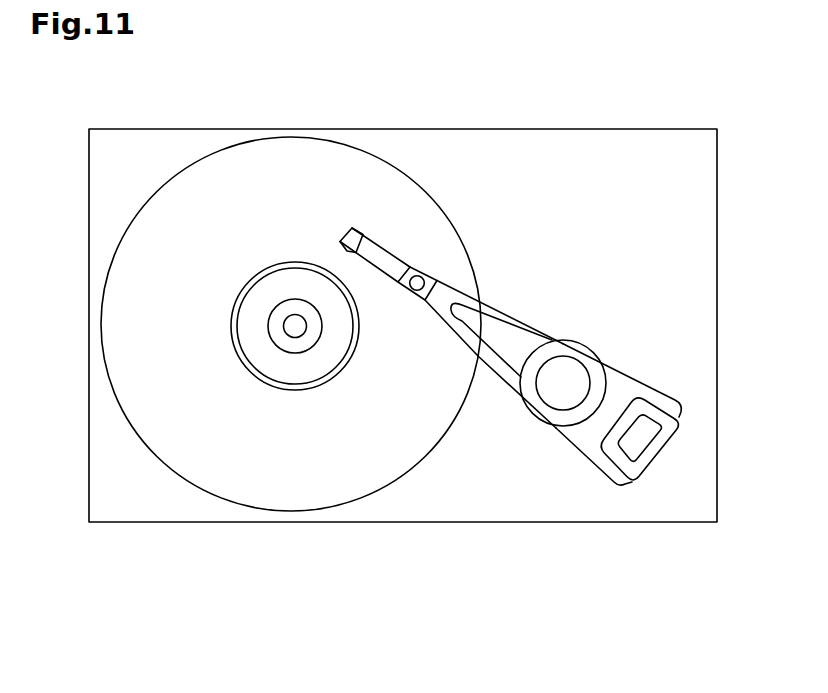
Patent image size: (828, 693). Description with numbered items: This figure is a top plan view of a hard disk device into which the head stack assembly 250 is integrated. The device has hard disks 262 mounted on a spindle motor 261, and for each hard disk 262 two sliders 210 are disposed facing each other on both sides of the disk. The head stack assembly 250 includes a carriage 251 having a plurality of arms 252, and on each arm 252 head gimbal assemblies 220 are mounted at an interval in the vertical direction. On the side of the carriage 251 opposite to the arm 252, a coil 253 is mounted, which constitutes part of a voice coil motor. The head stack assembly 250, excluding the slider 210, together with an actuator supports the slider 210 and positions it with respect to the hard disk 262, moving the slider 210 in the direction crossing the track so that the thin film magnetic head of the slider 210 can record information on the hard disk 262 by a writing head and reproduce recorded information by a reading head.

The slider 210 is at (359, 250).
The head gimbal assembly 220 is at (393, 282).
The head stack assembly 250 is at (571, 442).
The carriage 251 is at (573, 340).
The arm 252 is at (500, 385).
The coil 253 is at (662, 457).
The spindle motor 261 is at (297, 337).
The hard disk 262 is at (222, 502).